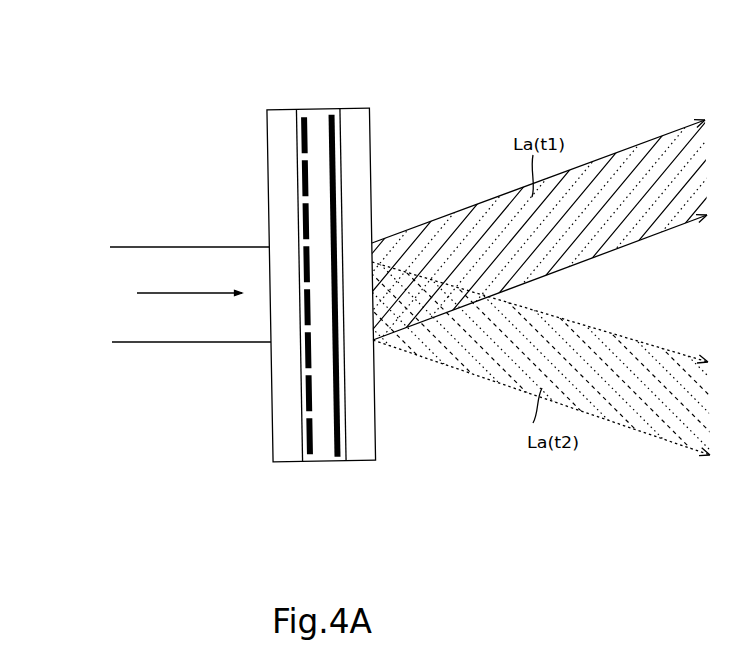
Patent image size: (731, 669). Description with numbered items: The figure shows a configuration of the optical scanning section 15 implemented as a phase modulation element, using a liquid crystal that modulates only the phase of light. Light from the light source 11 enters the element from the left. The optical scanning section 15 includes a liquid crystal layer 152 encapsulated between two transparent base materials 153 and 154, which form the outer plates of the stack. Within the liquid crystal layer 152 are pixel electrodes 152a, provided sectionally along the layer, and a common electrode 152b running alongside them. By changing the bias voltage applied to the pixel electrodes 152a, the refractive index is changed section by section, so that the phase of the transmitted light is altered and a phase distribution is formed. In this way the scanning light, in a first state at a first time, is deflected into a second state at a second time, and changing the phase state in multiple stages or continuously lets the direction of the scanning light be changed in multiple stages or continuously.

The optical scanning section 15 is at (318, 104).
The transparent base material 153 is at (283, 118).
The transparent base material 154 is at (357, 123).
The liquid crystal layer 152 is at (327, 333).
The pixel electrode 152a is at (307, 460).
The common electrode 152b is at (342, 460).
The light source 11 is at (172, 258).